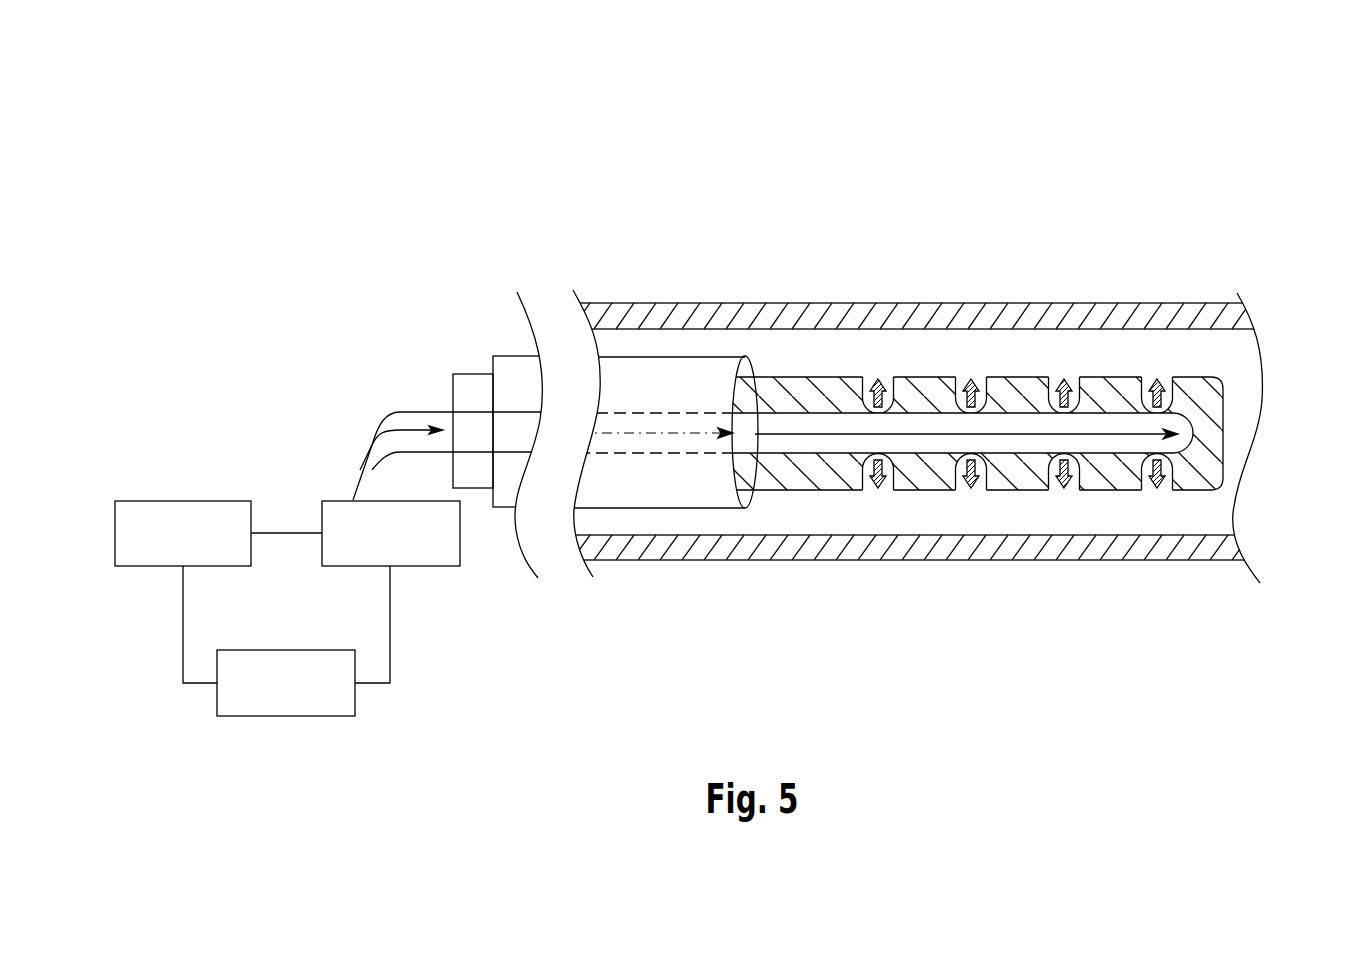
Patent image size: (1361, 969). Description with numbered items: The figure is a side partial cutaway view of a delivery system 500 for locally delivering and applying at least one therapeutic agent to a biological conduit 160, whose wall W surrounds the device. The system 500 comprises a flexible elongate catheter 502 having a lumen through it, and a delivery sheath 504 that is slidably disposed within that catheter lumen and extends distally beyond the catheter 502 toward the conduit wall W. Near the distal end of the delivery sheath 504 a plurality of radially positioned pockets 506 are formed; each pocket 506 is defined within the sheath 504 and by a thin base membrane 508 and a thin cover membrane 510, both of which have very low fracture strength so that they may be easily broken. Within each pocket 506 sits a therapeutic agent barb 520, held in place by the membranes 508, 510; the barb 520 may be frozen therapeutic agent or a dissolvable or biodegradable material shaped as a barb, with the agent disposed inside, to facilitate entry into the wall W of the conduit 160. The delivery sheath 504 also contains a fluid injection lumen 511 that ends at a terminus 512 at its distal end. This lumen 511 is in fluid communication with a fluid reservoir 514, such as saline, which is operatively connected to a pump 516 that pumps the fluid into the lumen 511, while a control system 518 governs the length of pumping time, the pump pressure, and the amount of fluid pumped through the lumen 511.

The delivery system 500 is at (729, 471).
The flexible elongate catheter 502 is at (668, 356).
The delivery sheath 504 is at (1107, 491).
The pockets 506 is at (913, 398).
The thin base membrane 508 is at (862, 393).
The thin cover membrane 510 is at (887, 378).
The fluid injection lumen 511 is at (1030, 442).
The terminus 512 is at (1195, 433).
The fluid reservoir 514 is at (443, 567).
The pump 516 is at (171, 500).
The control system 518 is at (273, 717).
The therapeutic agent barb 520 is at (882, 487).
The biological conduit 160 is at (1247, 366).
The wall of conduit W is at (1163, 305).